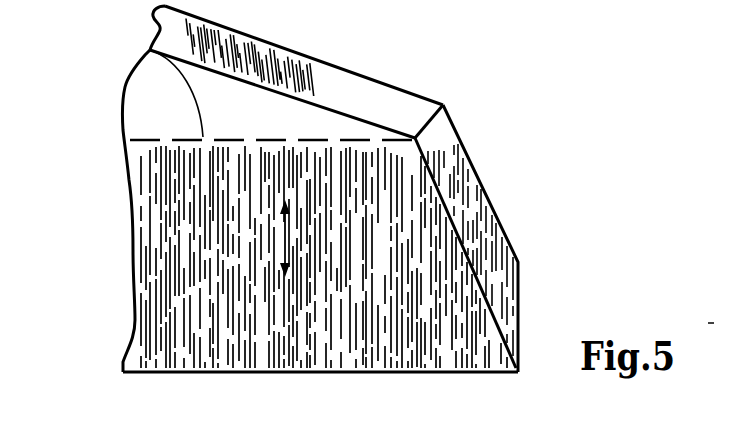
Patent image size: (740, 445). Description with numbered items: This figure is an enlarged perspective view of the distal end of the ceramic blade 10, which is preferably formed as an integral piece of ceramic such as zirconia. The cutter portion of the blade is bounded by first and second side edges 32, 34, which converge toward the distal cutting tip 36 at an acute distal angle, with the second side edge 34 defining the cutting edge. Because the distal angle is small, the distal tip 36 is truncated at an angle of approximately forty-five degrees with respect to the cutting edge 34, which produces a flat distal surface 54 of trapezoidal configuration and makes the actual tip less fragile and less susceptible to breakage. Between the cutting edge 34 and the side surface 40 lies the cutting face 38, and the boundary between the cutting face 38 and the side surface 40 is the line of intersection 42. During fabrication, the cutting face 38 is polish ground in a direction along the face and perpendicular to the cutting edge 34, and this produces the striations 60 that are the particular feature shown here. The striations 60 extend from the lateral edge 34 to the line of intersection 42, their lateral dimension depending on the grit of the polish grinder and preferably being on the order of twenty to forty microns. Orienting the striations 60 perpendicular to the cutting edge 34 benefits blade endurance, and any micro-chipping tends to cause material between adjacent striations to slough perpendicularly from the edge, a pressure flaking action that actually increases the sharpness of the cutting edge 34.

The blade 10 is at (428, 275).
The first side edge 32 is at (297, 70).
The second side edge 34 is at (432, 373).
The distal cutting tip 36 is at (522, 122).
The cutting face 38 is at (290, 197).
The side surface 40 is at (158, 112).
The line of intersection 42 is at (150, 50).
The flat distal surface 54 is at (483, 222).
The striations 60 is at (158, 272).